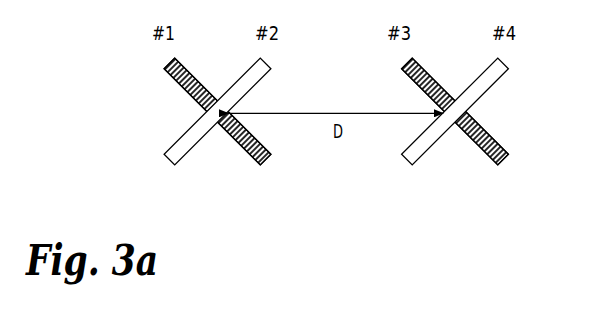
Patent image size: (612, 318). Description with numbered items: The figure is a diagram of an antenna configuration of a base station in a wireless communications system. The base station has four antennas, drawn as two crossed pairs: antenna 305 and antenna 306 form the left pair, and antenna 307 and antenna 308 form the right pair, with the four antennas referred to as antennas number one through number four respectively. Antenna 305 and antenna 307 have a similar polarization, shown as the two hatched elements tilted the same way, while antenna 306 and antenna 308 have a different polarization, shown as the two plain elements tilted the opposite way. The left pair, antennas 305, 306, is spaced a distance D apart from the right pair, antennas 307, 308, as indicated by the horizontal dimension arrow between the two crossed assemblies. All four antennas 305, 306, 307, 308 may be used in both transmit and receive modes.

The antenna 305 is at (162, 68).
The antenna 306 is at (162, 155).
The antenna 307 is at (508, 155).
The antenna 308 is at (508, 68).